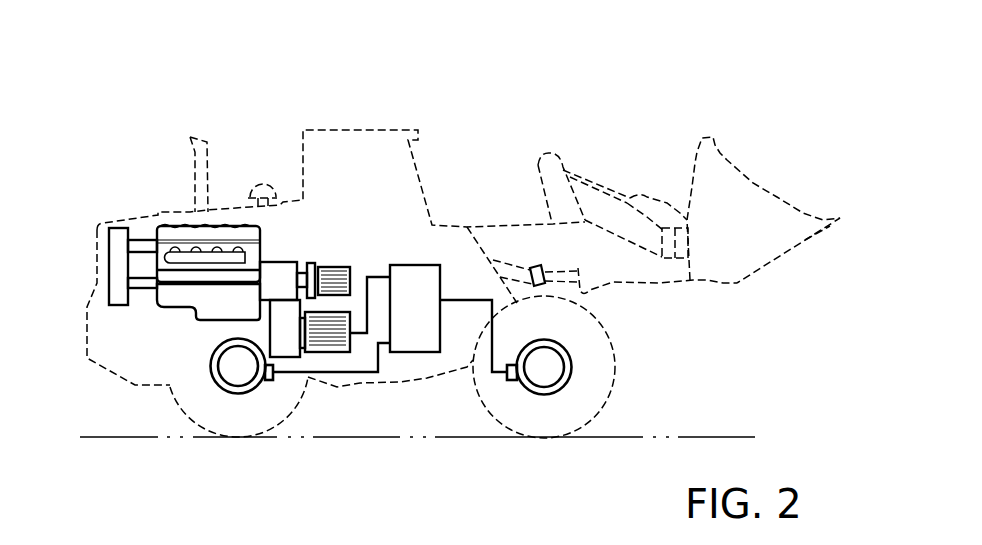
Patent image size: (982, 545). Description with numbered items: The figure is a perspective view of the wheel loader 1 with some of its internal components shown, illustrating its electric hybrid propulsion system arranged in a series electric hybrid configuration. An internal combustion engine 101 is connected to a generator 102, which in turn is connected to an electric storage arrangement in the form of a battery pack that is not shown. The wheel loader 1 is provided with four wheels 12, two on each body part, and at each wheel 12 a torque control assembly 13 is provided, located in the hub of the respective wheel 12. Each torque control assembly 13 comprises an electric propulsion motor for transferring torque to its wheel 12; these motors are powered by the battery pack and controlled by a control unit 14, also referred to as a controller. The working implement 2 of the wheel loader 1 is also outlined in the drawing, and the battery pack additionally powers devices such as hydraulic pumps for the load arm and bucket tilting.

The wheel loader 1 is at (348, 72).
The working implement (boom and bucket) 2 is at (786, 152).
The internal combustion engine 101 is at (177, 227).
The generator 102 is at (332, 353).
The control unit 14 is at (418, 327).
The torque control assembly 13 is at (235, 367).
The wheel 12 is at (242, 420).